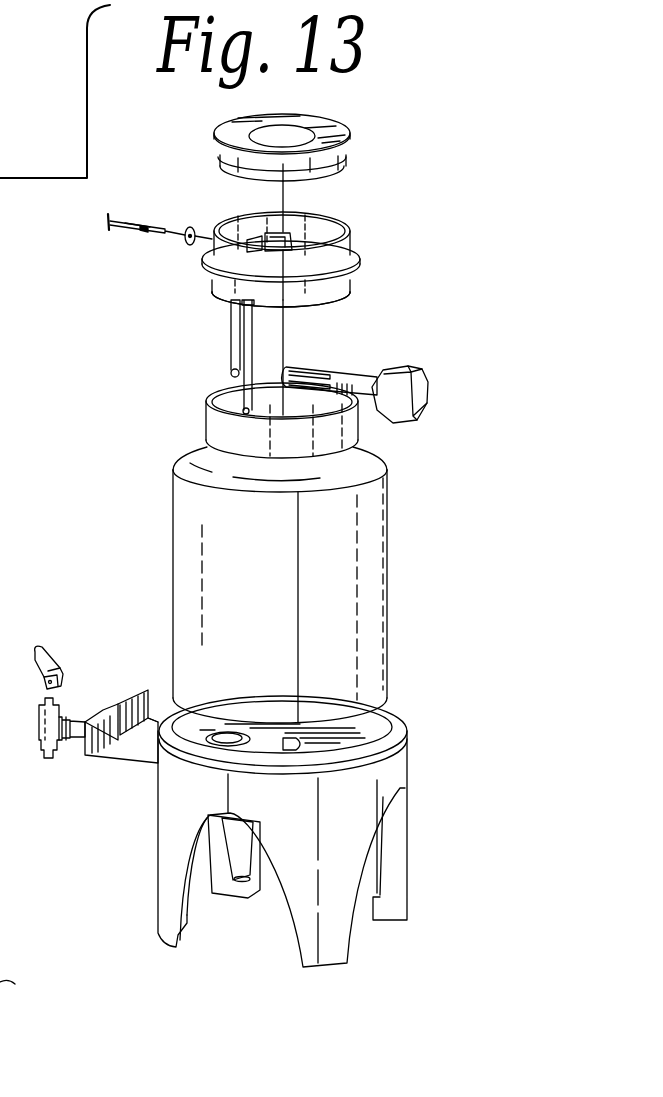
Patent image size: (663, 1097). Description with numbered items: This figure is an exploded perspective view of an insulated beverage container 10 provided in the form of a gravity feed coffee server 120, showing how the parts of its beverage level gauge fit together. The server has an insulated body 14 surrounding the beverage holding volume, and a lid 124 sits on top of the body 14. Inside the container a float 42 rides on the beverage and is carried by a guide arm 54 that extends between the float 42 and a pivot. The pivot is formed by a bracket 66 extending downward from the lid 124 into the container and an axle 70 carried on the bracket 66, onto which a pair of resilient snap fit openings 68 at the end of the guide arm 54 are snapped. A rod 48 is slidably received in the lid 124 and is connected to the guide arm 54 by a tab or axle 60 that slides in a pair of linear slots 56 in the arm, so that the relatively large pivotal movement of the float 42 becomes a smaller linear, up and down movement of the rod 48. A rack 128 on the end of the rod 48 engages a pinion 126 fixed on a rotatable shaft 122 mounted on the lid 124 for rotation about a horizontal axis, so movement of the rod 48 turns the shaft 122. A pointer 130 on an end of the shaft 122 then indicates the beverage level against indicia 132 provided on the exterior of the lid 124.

The insulated beverage container 10 is at (45, 391).
The insulated body 14 is at (178, 597).
The float 42 is at (0, 73).
The rod 48 is at (247, 350).
The guide arm 54 is at (372, 378).
The linear slots 56 is at (210, 405).
The tab or axle 60 is at (242, 412).
The bracket 66 is at (230, 328).
The snap fit openings 68 is at (270, 370).
The axle 70 is at (230, 371).
The gravity feed coffee server 120 is at (138, 527).
The rotatable shaft 122 is at (132, 230).
The lid 124 is at (314, 262).
The pinion 126 is at (143, 222).
The rack 128 is at (250, 306).
The pointer 130 is at (106, 222).
The indicia 132 is at (185, 243).